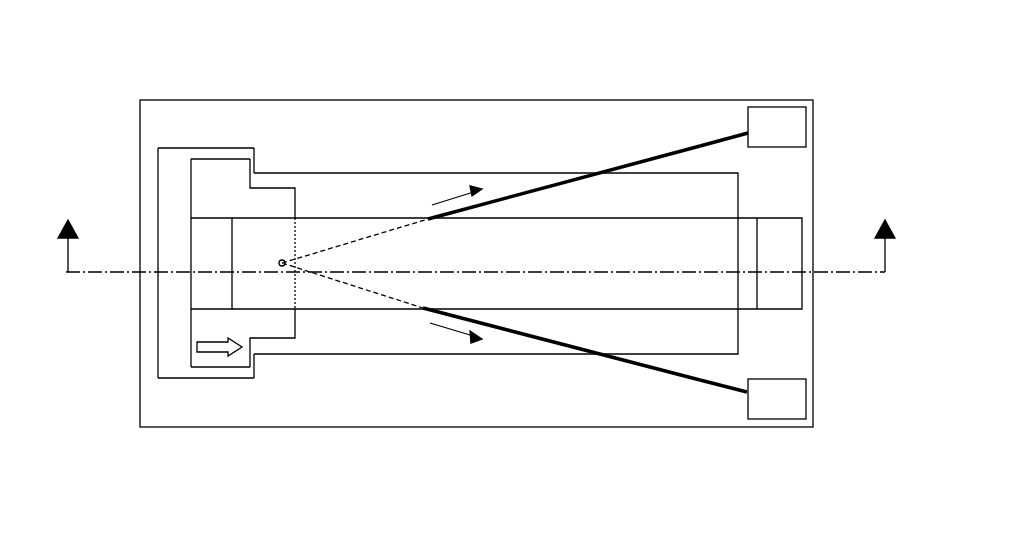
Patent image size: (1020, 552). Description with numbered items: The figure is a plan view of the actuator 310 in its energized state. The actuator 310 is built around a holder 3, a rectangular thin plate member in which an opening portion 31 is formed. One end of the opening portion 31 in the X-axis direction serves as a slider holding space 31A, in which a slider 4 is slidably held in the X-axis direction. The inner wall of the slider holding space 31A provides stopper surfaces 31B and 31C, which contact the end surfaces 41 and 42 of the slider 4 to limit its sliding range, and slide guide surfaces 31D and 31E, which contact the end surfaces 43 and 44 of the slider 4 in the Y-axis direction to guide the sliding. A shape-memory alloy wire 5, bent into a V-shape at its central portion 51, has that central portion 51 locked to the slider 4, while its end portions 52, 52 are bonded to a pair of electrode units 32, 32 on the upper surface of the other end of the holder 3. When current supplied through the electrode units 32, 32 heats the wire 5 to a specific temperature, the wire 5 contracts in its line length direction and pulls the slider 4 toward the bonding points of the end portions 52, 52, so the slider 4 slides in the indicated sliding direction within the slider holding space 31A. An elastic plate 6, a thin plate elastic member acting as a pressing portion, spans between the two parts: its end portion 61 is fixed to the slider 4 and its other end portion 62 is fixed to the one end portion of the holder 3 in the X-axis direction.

The actuator 310 is at (511, 31).
The holder 3 is at (683, 99).
The opening portion 31 is at (415, 345).
The slider holding space 31A is at (163, 152).
The stopper surface 31B is at (160, 338).
The stopper surface 31C is at (253, 378).
The slide guide surface 31D is at (197, 148).
The slide guide surface 31E is at (189, 378).
The electrode unit 32 is at (806, 402).
The slider 4 is at (202, 183).
The end surface 41 is at (187, 205).
The end surface 42 is at (260, 345).
The end surface 43 is at (217, 158).
The end surface 44 is at (222, 368).
The shape-memory alloy wire 5 is at (657, 372).
The central portion 51 is at (285, 260).
The end portion 52 is at (746, 398).
The elastic plate 6 is at (543, 217).
The end portion 61 is at (187, 252).
The end portion 62 is at (802, 235).